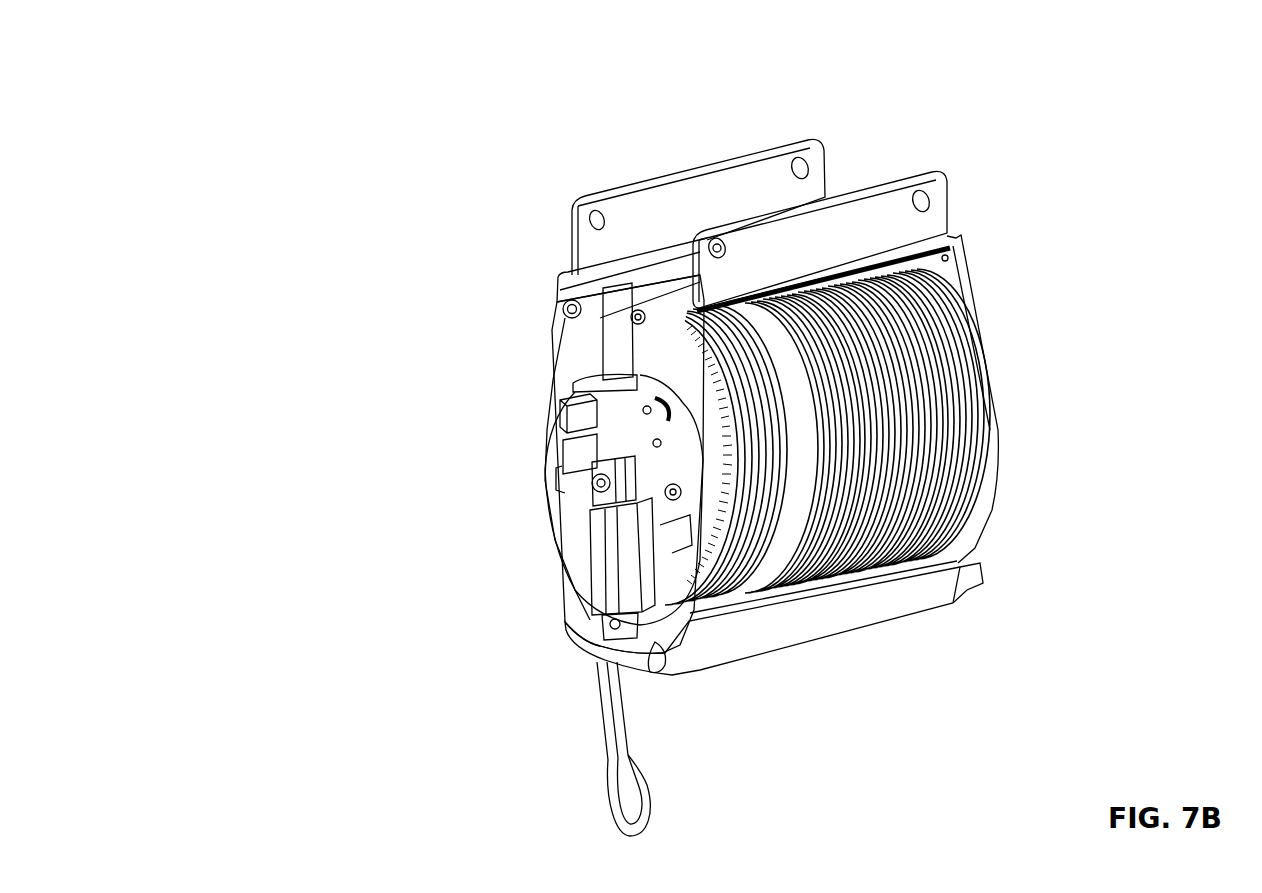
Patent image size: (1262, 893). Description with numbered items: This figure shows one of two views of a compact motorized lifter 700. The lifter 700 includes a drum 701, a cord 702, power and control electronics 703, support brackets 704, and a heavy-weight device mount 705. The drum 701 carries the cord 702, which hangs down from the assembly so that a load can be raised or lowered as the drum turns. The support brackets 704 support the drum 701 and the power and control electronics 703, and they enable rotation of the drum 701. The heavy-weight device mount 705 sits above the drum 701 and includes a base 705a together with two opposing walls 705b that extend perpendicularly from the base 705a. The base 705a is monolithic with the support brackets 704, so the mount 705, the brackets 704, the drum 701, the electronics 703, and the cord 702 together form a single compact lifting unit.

The lifter 700 is at (270, 115).
The drum 701 is at (874, 618).
The cord 702 is at (652, 805).
The power and control electronics 703 is at (549, 527).
The support brackets 704 is at (955, 280).
The heavy-weight device mount 705 is at (594, 159).
The base 705a is at (637, 268).
The opposing walls 705b is at (678, 223).